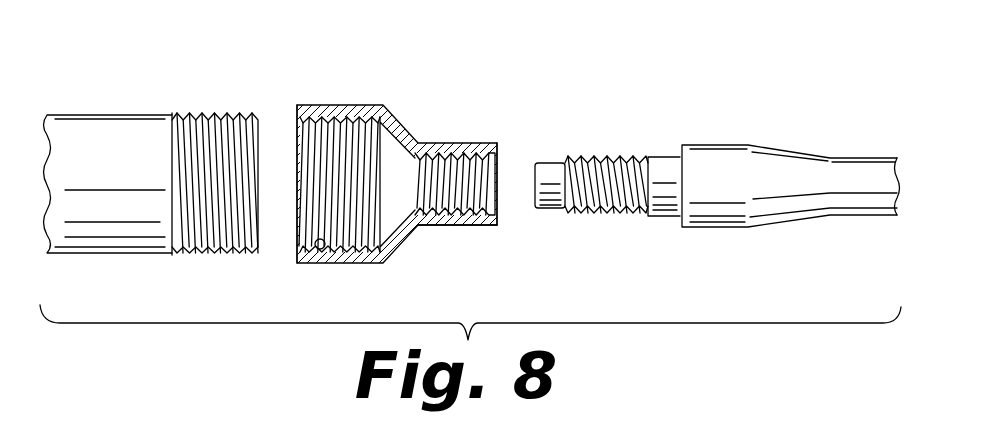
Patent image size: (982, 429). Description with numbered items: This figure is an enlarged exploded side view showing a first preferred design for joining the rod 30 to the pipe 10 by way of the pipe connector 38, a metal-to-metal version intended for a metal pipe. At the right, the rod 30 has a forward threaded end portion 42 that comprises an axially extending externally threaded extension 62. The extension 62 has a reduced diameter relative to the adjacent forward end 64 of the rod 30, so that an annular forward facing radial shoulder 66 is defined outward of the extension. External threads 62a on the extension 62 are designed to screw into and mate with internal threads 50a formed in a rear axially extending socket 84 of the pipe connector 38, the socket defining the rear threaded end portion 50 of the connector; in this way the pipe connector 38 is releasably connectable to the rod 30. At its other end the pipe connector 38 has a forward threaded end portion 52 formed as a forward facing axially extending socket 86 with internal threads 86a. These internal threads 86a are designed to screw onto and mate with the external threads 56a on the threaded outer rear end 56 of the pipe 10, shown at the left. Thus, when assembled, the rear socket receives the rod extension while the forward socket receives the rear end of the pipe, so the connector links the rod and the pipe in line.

The pipe 10 is at (110, 113).
The threaded outer rear end 56 is at (213, 113).
The external threads 56a is at (219, 254).
The pipe connector 38 is at (410, 108).
The forward threaded end portion 52 is at (331, 113).
The rear threaded end portion 50 is at (456, 150).
The rear axially extending socket 84 is at (498, 181).
The forward facing axially extending socket 86 is at (297, 205).
The internal threads 86a is at (319, 250).
The internal threads 50a is at (482, 226).
The forward threaded end portion 42 is at (602, 185).
The externally threaded extension 62 is at (553, 210).
The external threads 62a is at (626, 214).
The annular forward facing radial shoulder 66 is at (683, 226).
The forward end 64 is at (708, 145).
The rod 30 is at (815, 150).